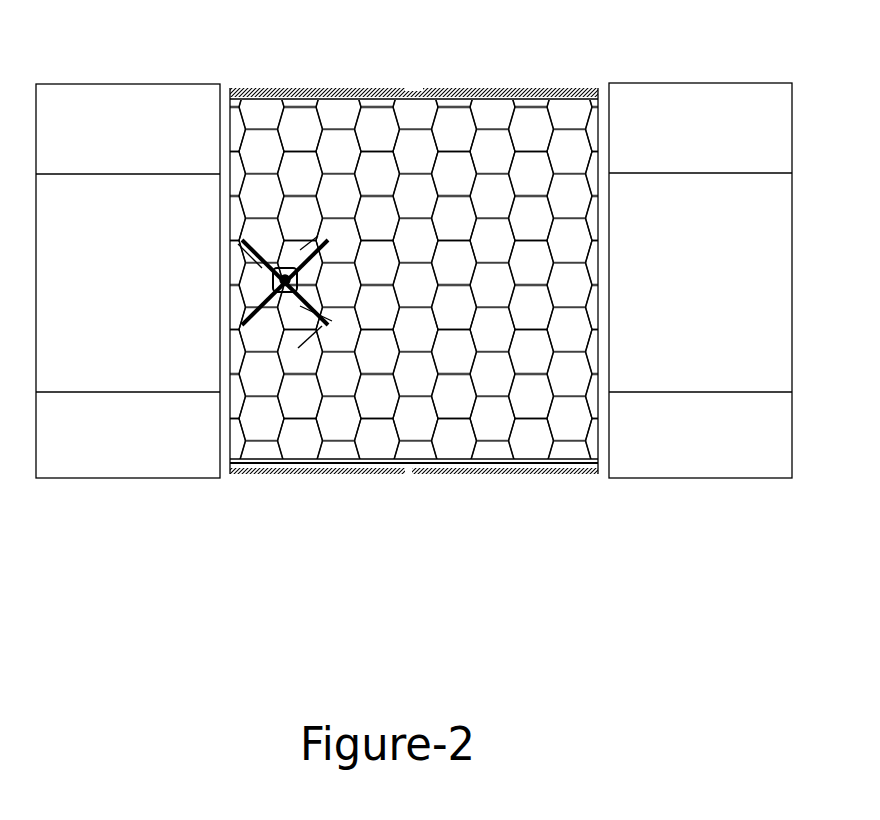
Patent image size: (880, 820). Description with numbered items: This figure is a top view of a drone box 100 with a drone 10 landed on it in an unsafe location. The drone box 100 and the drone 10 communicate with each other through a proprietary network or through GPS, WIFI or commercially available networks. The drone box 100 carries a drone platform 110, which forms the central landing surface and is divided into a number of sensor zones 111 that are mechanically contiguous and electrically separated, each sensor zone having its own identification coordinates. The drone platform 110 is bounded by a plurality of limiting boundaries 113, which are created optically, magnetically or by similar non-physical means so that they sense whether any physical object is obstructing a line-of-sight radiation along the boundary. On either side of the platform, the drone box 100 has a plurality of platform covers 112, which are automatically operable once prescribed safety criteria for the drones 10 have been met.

The drone box 100 is at (571, 551).
The drone 10 is at (283, 250).
The drone platform 110 is at (520, 86).
The sensor zones 111 is at (370, 122).
The platform covers 112 is at (122, 98).
The limiting boundaries 113 is at (421, 100).